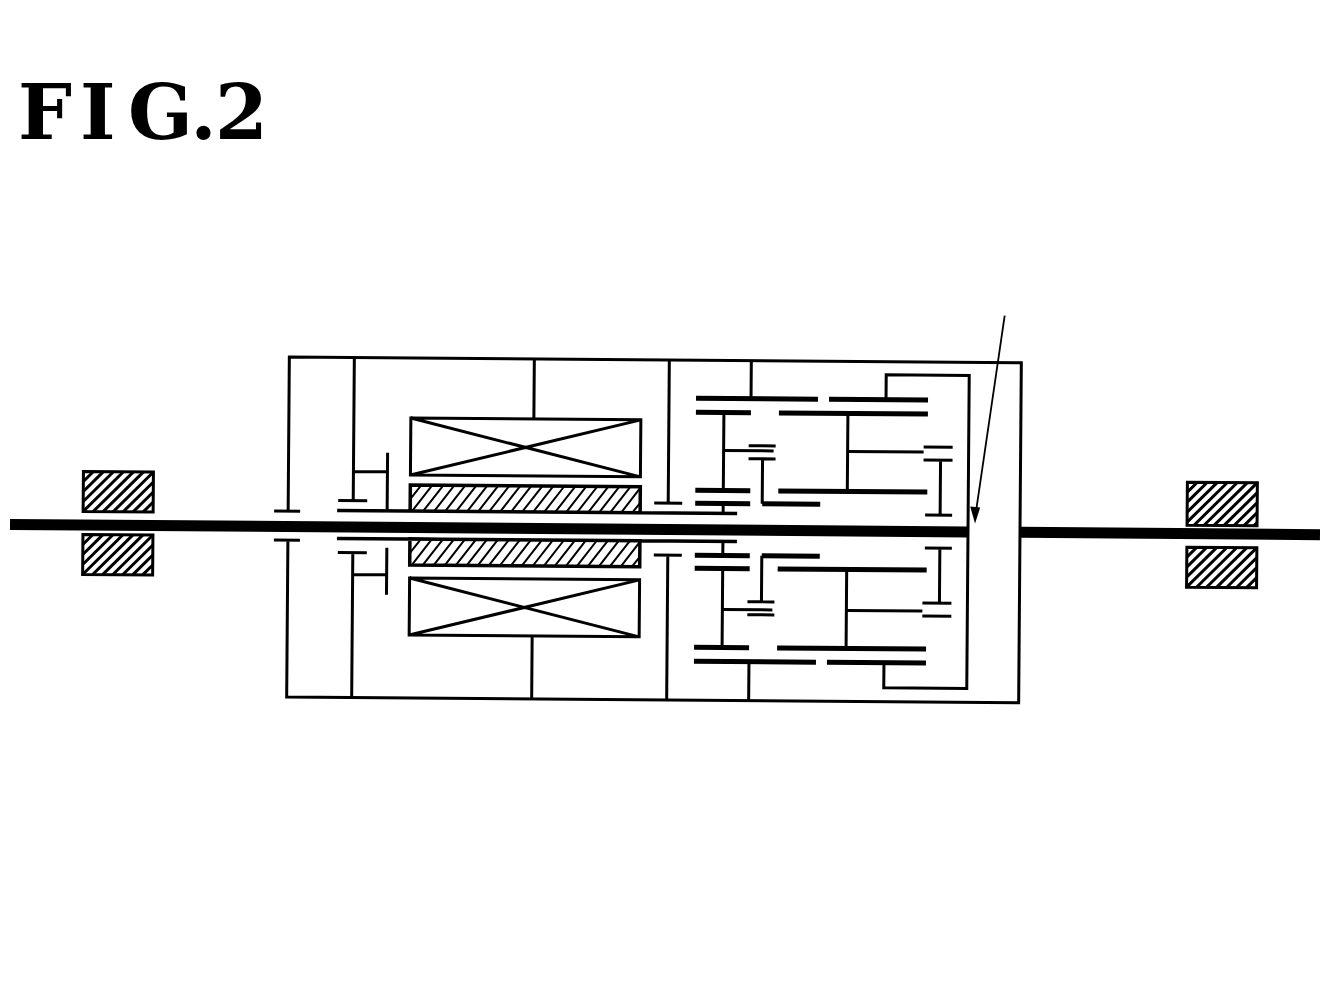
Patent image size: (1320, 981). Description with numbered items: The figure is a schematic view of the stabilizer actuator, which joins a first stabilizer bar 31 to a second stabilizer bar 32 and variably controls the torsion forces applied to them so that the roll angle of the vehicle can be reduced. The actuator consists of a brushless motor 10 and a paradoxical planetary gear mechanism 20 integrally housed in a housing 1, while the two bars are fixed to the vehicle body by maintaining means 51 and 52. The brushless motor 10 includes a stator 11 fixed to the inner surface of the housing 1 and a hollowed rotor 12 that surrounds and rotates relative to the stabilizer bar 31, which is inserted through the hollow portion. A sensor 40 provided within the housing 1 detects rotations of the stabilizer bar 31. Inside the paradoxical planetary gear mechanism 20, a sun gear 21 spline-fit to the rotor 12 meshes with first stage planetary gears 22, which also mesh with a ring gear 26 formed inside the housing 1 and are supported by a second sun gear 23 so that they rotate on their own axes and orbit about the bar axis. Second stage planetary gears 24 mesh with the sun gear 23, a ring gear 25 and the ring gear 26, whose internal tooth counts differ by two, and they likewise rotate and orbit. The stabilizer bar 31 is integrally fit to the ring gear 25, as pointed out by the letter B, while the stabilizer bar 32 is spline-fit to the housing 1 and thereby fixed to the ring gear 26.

The housing 1 is at (560, 700).
The brushless motor 10 is at (460, 660).
The stator 11 is at (475, 445).
The rotor 12 is at (408, 495).
The paradoxical planetary gear mechanism 20 is at (793, 669).
The sun gear 21 is at (695, 556).
The first stage planetary gear 22 is at (695, 647).
The sun gear 23 is at (763, 478).
The planetary gear 24 is at (818, 652).
The ring gear 25 is at (867, 398).
The ring gear 26 is at (722, 398).
The stabilizer bar 31 is at (193, 524).
The stabilizer bar 32 is at (1100, 524).
The sensor 40 is at (370, 582).
The maintaining means 51 is at (117, 476).
The maintaining means 52 is at (1232, 478).
The letter B is at (991, 400).